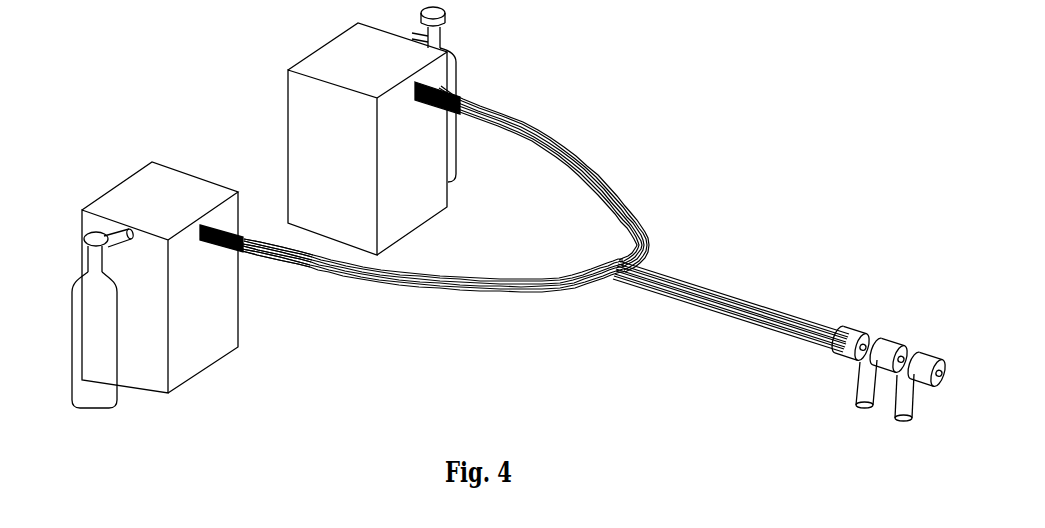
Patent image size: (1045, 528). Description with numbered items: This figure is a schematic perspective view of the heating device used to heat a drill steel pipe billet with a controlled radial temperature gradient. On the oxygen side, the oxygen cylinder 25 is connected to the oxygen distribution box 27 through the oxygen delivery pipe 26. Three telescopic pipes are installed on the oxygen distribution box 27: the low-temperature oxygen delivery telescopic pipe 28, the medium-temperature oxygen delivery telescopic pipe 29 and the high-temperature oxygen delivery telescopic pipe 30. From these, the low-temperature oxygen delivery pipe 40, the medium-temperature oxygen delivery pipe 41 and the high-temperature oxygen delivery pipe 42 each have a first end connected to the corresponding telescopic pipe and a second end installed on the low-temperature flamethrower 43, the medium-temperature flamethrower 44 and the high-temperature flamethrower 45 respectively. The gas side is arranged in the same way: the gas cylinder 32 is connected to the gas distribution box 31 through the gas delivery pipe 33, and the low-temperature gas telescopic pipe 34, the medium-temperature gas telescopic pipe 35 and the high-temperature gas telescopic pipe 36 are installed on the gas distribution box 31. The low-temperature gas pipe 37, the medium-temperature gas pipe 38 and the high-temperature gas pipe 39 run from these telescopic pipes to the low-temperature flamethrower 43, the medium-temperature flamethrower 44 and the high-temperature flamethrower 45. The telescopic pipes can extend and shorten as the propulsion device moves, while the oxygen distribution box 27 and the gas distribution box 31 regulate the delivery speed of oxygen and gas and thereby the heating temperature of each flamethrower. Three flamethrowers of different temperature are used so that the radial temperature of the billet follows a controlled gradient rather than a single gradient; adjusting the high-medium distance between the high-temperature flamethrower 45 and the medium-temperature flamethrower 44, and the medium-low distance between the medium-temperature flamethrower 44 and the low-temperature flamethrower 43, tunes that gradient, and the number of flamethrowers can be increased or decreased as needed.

The oxygen cylinder 25 is at (96, 295).
The oxygen delivery pipe 26 is at (108, 238).
The oxygen distribution box 27 is at (125, 207).
The low-temperature oxygen delivery telescopic pipe 28 is at (207, 229).
The medium-temperature oxygen delivery telescopic pipe 29 is at (225, 234).
The high-temperature oxygen delivery telescopic pipe 30 is at (240, 238).
The gas distribution box 31 is at (373, 173).
The gas cylinder 32 is at (450, 120).
The gas delivery pipe 33 is at (420, 34).
The low-temperature gas telescopic pipe 34 is at (425, 93).
The medium-temperature gas telescopic pipe 35 is at (447, 93).
The high-temperature gas telescopic pipe 36 is at (462, 95).
The low-temperature gas pipe 37 is at (488, 111).
The medium-temperature gas pipe 38 is at (510, 117).
The high-temperature gas pipe 39 is at (537, 123).
The low-temperature oxygen delivery pipe 40 is at (455, 285).
The medium-temperature oxygen delivery pipe 41 is at (527, 280).
The high-temperature oxygen delivery pipe 42 is at (555, 277).
The low-temperature flamethrower 43 is at (850, 325).
The medium-temperature flamethrower 44 is at (895, 340).
The high-temperature flamethrower 45 is at (932, 353).